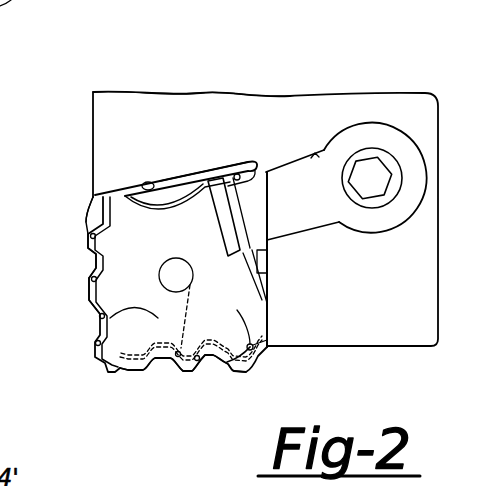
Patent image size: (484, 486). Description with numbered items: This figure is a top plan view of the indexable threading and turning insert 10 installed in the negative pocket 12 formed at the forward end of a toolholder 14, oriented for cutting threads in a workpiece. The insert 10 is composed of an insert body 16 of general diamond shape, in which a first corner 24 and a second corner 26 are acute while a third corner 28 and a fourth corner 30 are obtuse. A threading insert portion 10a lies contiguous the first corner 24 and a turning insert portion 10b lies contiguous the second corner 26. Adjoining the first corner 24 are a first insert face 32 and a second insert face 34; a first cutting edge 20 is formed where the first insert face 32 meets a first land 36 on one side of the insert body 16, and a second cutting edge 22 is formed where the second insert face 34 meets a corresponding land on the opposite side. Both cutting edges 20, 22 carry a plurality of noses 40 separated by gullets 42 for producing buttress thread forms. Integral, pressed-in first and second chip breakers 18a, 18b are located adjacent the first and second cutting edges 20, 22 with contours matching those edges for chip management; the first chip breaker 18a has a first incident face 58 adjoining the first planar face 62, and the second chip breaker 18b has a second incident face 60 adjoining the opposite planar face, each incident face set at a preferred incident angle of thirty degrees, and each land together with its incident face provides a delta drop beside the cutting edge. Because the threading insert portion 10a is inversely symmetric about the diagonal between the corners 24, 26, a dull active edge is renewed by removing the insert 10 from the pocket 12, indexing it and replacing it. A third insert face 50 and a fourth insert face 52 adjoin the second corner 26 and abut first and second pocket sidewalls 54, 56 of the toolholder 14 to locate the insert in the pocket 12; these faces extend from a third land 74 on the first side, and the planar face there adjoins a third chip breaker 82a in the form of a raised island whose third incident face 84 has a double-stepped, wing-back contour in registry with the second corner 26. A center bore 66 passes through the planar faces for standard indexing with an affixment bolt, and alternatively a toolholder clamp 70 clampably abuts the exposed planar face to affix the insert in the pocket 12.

The indexable threading and turning insert 10 is at (96, 376).
The threading insert portion 10a is at (110, 392).
The turning insert portion 10b is at (257, 135).
The pocket 12 is at (255, 293).
The toolholder 14 is at (196, 84).
The insert body 16 is at (272, 352).
The first chip breaker 18a is at (186, 323).
The second chip breaker 18b is at (214, 366).
The first cutting edge 20 is at (84, 262).
The second cutting edge 22 is at (186, 386).
The first corner 24 is at (113, 372).
The second corner 26 is at (265, 170).
The third corner 28 is at (102, 190).
The fourth corner 30 is at (285, 314).
The first insert face 32 is at (68, 296).
The second insert face 34 is at (217, 370).
The first land 36 is at (84, 231).
The noses 40 is at (84, 360).
The gullets 42 is at (90, 240).
The third insert face 50 is at (171, 163).
The fourth insert face 52 is at (276, 338).
The first pocket sidewall 54 is at (267, 258).
The second pocket sidewall 56 is at (143, 183).
The first incident face 58 is at (128, 300).
The second incident face 60 is at (233, 264).
The first planar face 62 is at (145, 233).
The center bore 66 is at (181, 258).
The toolholder clamp 70 is at (315, 157).
The third land 74 is at (201, 170).
The third chip breaker 82a is at (156, 204).
The third incident face 84 is at (267, 240).